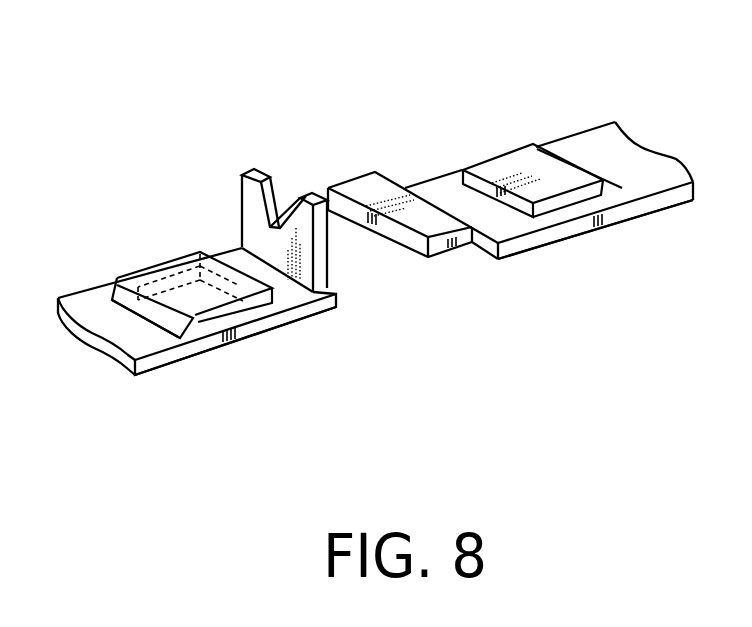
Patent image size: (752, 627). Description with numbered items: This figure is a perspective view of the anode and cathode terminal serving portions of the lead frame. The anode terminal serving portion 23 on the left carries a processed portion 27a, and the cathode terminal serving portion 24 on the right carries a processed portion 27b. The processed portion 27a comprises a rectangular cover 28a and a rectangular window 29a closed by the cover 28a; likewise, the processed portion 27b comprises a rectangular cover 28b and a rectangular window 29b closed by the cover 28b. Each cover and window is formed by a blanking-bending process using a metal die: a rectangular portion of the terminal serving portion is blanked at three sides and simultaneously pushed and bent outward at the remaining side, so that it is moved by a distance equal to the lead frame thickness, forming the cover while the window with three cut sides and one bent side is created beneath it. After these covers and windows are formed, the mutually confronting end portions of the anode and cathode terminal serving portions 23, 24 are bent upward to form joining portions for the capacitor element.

The anode terminal serving portion 23 is at (88, 305).
The cathode terminal serving portion 24 is at (590, 150).
The processed portion 27a is at (198, 213).
The processed portion 27b is at (529, 121).
The rectangular cover 28a is at (165, 270).
The rectangular cover 28b is at (503, 163).
The rectangular window 29a is at (243, 355).
The rectangular window 29b is at (610, 240).